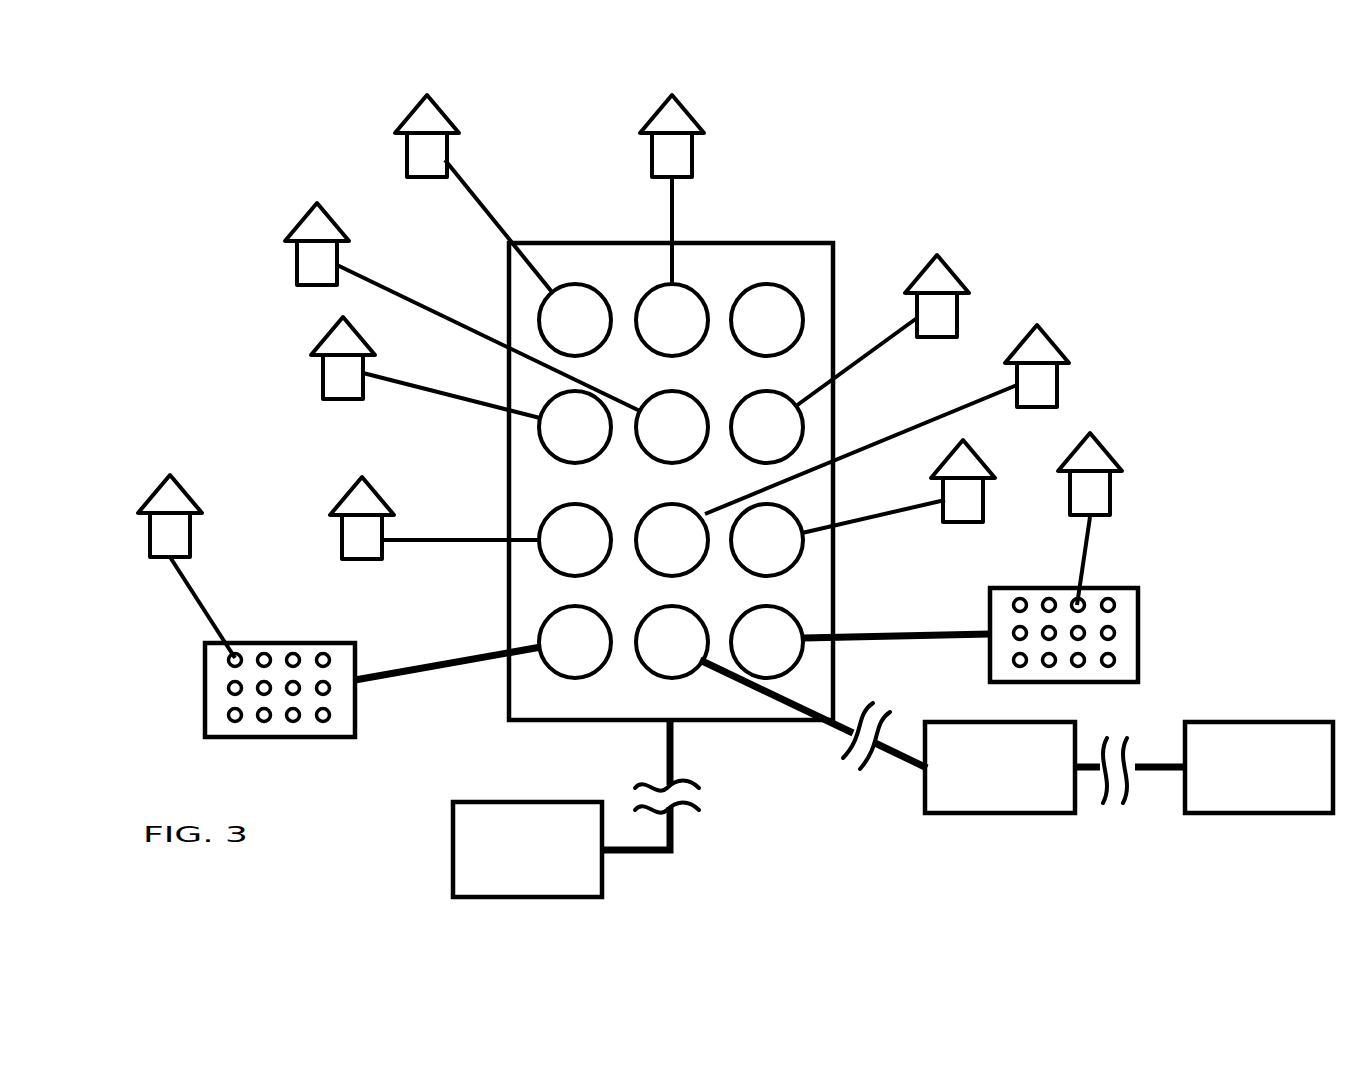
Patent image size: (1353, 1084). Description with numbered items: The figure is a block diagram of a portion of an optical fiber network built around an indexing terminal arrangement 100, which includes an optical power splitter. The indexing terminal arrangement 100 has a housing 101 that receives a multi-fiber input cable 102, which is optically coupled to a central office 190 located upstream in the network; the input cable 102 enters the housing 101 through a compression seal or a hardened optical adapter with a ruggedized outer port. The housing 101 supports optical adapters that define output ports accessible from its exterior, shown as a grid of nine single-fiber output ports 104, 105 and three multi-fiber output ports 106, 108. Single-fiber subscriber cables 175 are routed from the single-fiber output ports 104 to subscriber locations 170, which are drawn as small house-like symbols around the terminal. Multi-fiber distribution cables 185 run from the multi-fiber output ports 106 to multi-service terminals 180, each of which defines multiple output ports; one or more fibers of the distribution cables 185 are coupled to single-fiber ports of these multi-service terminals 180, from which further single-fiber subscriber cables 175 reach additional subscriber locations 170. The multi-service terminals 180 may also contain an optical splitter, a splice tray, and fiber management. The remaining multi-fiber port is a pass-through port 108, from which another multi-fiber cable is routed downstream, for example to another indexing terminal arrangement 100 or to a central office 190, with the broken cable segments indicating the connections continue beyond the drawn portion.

The indexing terminal arrangement 100 is at (738, 474).
The housing 101 is at (617, 481).
The multi-fiber input cable 102 is at (620, 785).
The single-fiber output ports 104 is at (671, 430).
The single-fiber output port 105 is at (767, 320).
The multi-fiber output ports 106 is at (671, 642).
The pass-through port 108 is at (781, 687).
The subscriber locations 170 is at (637, 327).
The single-fiber subscriber cables 175 is at (682, 409).
The multi-service terminals 180 is at (723, 655).
The multi-fiber distribution cables 185 is at (896, 609).
The central office 190 is at (893, 809).